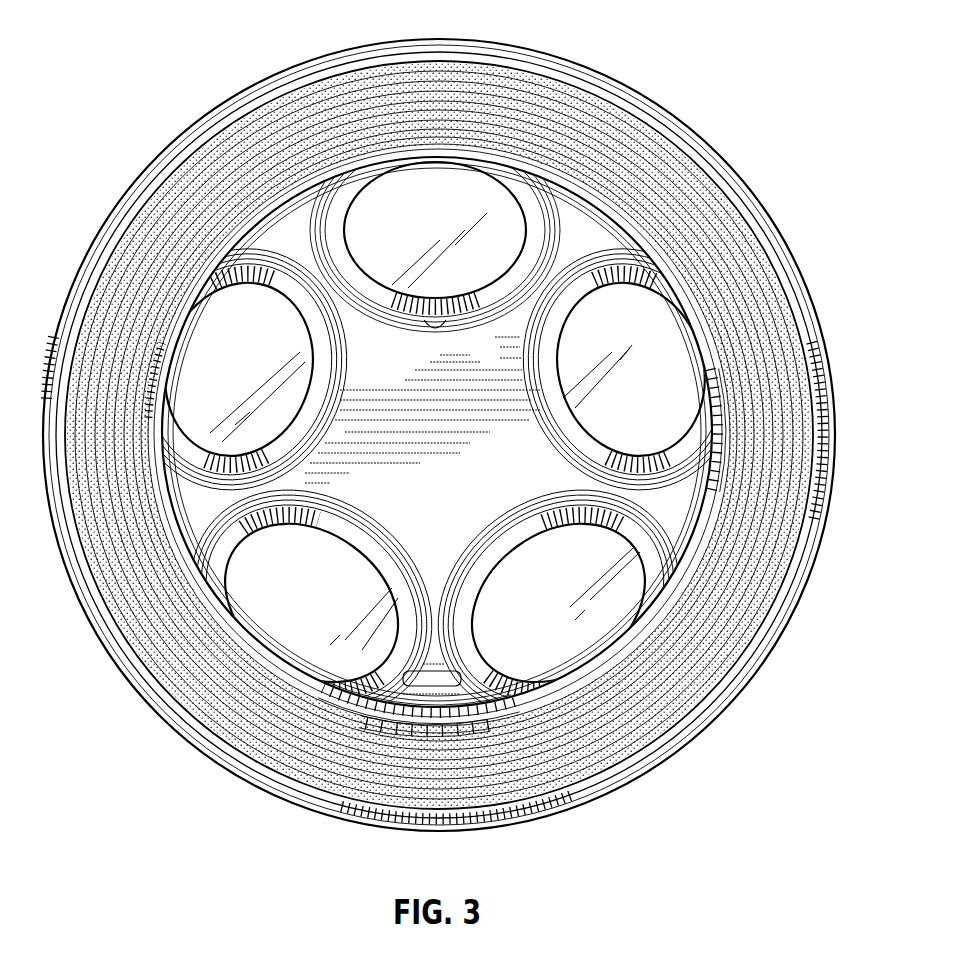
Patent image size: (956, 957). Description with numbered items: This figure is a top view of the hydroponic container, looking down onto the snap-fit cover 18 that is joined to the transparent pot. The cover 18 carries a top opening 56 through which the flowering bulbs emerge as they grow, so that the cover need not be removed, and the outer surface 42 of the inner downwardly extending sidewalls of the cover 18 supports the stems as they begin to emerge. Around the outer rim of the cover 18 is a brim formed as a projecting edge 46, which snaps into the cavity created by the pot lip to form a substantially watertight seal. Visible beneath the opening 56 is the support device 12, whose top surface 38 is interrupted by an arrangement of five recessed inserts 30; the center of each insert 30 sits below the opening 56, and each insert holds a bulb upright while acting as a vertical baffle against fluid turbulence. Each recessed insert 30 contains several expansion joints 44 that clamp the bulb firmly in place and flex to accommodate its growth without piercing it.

The support device 12 is at (540, 348).
The snap-fit cover 18 is at (828, 478).
The recessed inserts 30 is at (233, 268).
The top surface 38 is at (540, 412).
The outer surface 42 is at (148, 395).
The expansion joints 44 is at (560, 230).
The projecting edge 46 is at (821, 403).
The top opening 56 is at (447, 368).